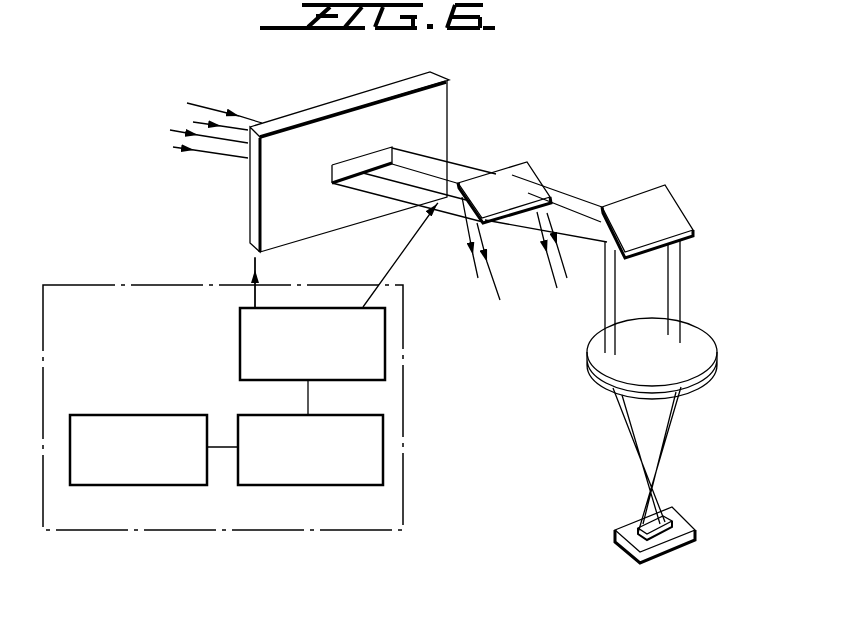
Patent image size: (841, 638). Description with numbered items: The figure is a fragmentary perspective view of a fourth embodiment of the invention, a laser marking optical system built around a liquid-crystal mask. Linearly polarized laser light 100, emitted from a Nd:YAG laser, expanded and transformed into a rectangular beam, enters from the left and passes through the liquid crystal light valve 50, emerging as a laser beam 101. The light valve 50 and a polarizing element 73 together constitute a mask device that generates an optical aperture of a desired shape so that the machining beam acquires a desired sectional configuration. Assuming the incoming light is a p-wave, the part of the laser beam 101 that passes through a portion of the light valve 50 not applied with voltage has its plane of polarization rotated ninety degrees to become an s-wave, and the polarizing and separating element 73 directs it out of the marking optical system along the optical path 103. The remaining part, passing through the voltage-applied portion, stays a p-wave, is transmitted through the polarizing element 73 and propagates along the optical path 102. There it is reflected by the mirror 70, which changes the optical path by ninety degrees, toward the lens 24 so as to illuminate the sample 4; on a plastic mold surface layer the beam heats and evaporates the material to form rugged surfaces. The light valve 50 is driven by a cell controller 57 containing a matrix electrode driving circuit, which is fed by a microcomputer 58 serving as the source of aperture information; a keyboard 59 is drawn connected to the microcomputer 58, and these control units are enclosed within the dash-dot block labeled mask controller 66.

The laser light 100 is at (220, 80).
The liquid crystal light valve 50 is at (323, 104).
The laser beam 101 is at (470, 165).
The polarizing element 73 is at (533, 170).
The optical path 102 is at (570, 185).
The optical path 103 is at (495, 280).
The mirror 70 is at (685, 211).
The lens 24 is at (717, 350).
The sample 4 is at (687, 517).
The cell controller 57 is at (238, 342).
The microcomputer 58 is at (262, 413).
The keyboard 59 is at (137, 415).
The mask controller 66 is at (275, 532).